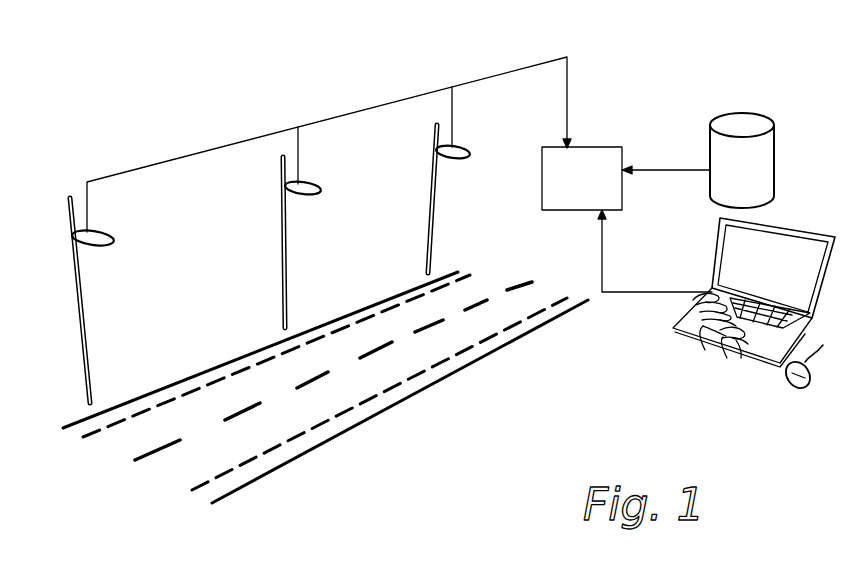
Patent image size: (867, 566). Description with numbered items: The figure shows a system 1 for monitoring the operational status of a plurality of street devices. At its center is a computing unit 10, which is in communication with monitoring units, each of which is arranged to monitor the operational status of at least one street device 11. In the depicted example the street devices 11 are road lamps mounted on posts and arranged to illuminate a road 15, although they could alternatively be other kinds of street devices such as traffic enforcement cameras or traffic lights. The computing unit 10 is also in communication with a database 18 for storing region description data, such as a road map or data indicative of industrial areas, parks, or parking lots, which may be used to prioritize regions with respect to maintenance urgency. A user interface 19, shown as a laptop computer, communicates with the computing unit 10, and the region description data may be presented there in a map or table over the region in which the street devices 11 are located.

The system 1 is at (616, 65).
The computing unit 10 is at (616, 146).
The street device 11 is at (103, 233).
The road 15 is at (393, 405).
The database 18 is at (777, 150).
The user interface 19 is at (765, 360).